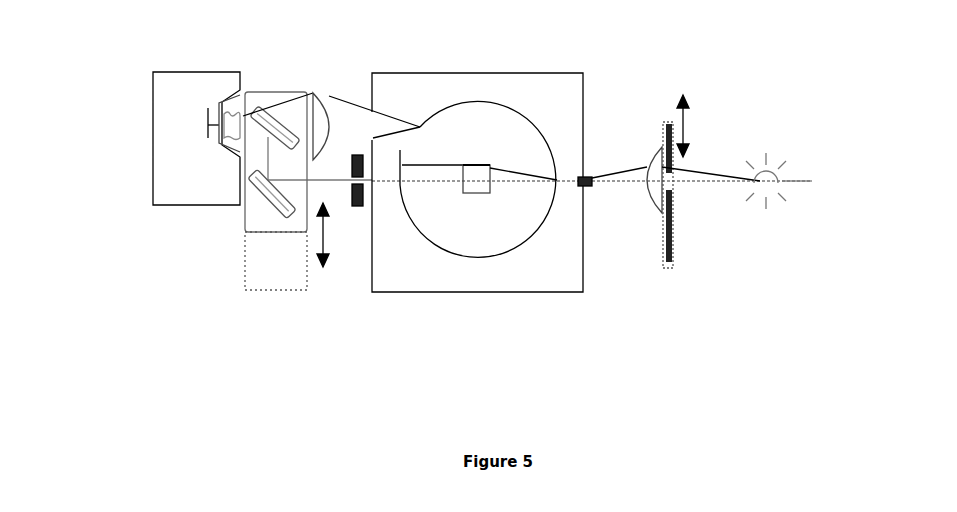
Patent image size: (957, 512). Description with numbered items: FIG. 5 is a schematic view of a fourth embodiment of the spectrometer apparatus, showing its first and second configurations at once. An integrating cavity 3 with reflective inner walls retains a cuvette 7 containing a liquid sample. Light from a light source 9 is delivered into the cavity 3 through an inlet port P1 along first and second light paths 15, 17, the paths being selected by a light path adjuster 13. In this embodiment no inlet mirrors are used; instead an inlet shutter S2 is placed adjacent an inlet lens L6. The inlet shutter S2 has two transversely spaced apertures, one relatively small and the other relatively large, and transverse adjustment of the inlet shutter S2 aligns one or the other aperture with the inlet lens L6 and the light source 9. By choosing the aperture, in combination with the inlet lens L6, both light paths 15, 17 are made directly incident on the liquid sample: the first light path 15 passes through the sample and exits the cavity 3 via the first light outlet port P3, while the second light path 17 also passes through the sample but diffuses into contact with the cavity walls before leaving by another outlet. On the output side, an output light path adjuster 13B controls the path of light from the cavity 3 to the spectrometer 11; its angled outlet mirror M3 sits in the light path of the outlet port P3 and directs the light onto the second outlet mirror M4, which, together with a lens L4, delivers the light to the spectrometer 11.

The spectrometer 11 is at (173, 113).
The second outlet mirror M4 is at (262, 112).
The lens L4 is at (323, 118).
The integrating cavity 3 is at (425, 92).
The second light path 17 is at (503, 128).
The inlet port P1 is at (583, 177).
The first light path 15 is at (705, 180).
The light source 9 is at (768, 178).
The first outlet mirror M3 is at (268, 193).
The first light outlet port P3 is at (373, 182).
The cuvette 7 is at (480, 188).
The inlet lens L6 is at (652, 200).
The inlet shutter S2 is at (667, 243).
The light path adjuster 13 is at (715, 323).
The output light path adjuster 13B is at (248, 333).